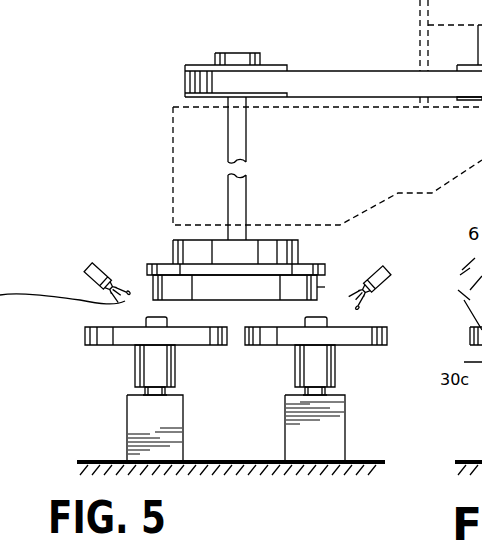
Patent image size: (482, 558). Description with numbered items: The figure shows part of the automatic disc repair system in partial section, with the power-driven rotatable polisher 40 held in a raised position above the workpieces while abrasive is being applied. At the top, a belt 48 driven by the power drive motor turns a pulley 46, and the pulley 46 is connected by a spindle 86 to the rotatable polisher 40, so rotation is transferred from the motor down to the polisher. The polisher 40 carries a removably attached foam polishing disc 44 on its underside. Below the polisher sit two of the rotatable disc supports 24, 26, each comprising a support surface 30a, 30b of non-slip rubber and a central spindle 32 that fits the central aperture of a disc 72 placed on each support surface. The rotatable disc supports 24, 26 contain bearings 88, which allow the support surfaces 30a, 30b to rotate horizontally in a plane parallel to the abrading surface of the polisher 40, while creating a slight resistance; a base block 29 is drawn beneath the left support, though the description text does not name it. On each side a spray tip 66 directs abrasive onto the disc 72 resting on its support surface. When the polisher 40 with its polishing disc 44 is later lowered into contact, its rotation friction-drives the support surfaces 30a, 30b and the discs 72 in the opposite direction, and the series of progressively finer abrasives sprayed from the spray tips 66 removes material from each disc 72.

The rotatable disc support 24 is at (481, 440).
The rotatable disc support 26 is at (346, 430).
The first support block 29 is at (127, 437).
The support surface 30a is at (85, 338).
The support surface 30b is at (388, 340).
The central spindle 32 is at (148, 318).
The rotatable polisher 40 is at (150, 277).
The polishing disc 44 is at (325, 287).
The pulley 46 is at (187, 66).
The belt 48 is at (372, 76).
The spray tip 66 is at (92, 284).
The disc 72 is at (85, 328).
The spindle 86 is at (240, 53).
The bearings 88 is at (143, 392).